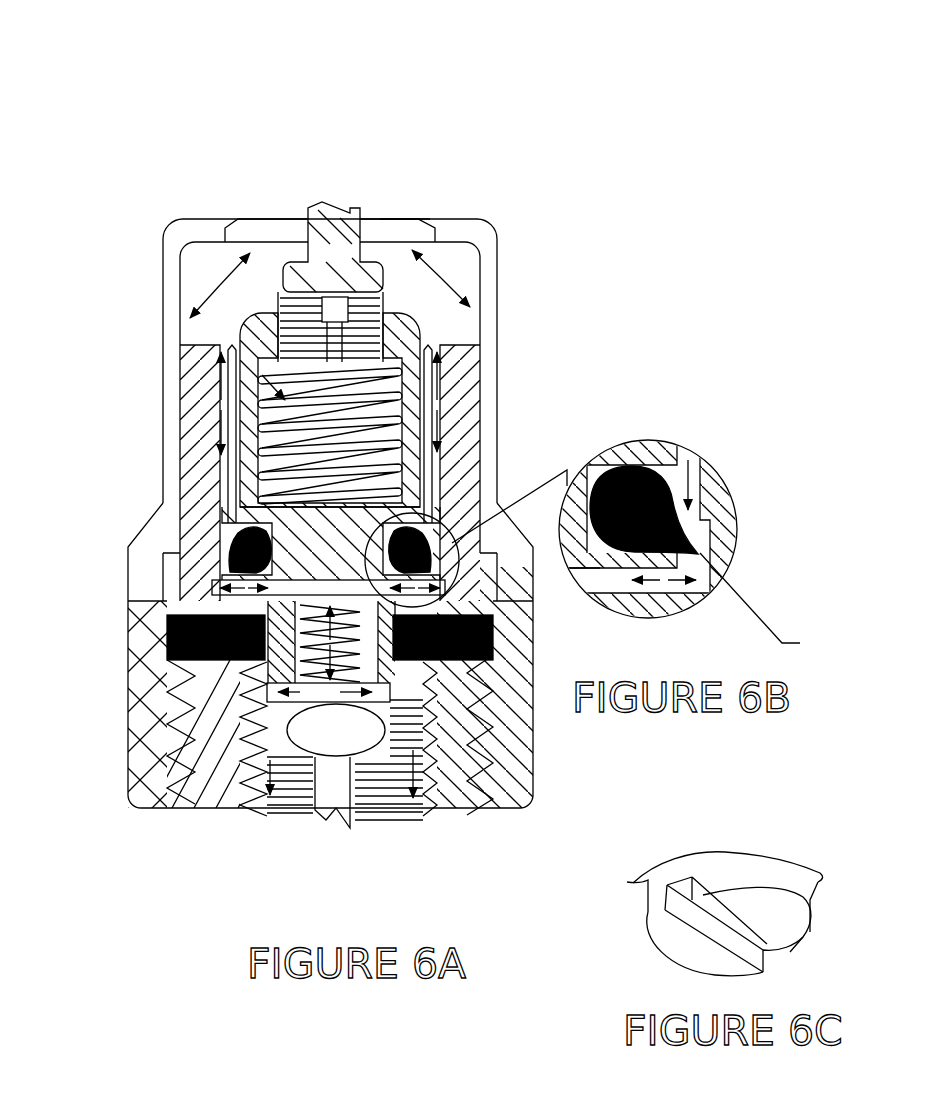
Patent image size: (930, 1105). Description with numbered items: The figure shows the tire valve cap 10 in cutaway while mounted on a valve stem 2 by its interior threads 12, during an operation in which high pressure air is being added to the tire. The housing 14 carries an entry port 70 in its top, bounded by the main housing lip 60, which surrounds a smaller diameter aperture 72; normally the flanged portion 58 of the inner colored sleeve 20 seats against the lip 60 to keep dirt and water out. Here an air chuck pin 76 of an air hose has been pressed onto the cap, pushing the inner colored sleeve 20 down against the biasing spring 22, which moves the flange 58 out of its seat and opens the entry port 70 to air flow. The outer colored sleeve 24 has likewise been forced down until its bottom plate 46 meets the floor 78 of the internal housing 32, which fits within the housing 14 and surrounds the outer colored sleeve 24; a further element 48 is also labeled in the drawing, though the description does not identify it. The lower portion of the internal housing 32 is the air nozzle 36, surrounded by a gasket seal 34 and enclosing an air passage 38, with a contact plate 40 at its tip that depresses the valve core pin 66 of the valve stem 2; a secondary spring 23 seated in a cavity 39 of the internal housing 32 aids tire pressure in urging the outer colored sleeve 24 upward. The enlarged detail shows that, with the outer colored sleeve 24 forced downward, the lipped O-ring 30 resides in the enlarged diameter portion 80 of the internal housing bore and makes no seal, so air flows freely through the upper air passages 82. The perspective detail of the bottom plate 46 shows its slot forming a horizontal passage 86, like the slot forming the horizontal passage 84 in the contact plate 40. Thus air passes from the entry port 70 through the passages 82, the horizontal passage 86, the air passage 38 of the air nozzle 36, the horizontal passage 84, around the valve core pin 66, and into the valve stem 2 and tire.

In FIG. 6A, the tire valve cap 10 is at (85, 130).
In FIG. 6A, the main housing lip 60 is at (233, 208).
In FIG. 6A, the entry port 70 is at (266, 245).
In FIG. 6A, the aperture 72 is at (397, 214).
In FIG. 6A, the air chuck pin 76 is at (340, 203).
In FIG. 6A, the air passage 82 is at (448, 265).
In FIG. 6A, the flanged portion 58 is at (245, 424).
In FIG. 6A, the inner colored sleeve 20 is at (236, 333).
In FIG. 6A, the outer colored sleeve 24 is at (437, 343).
In FIG. 6C, the outer colored sleeve 24 is at (648, 892).
In FIG. 6A, the biasing spring 22 is at (237, 347).
In FIG. 6A, the main spring 48 is at (367, 481).
In FIG. 6A, the floor 78 is at (442, 440).
In FIG. 6A, the internal housing 32 is at (176, 455).
In FIG. 6A, the lipped O-ring 30 is at (222, 537).
In FIG. 6A, the housing 14 is at (154, 552).
In FIG. 6A, the enlarged diameter portion 80 is at (200, 571).
In FIG. 6A, the bottom plate 46 is at (167, 616).
In FIG. 6C, the bottom plate 46 is at (652, 948).
In FIG. 6A, the gasket seal 34 is at (160, 660).
In FIG. 6A, the air passage 38 is at (187, 708).
In FIG. 6A, the cavity 39 is at (283, 643).
In FIG. 6A, the air nozzle 36 is at (200, 740).
In FIG. 6A, the secondary spring 23 is at (290, 713).
In FIG. 6A, the contact plate 40 is at (214, 800).
In FIG. 6A, the horizontal passage 84 is at (265, 704).
In FIG. 6A, the valve core pin 66 is at (345, 762).
In FIG. 6A, the interior threads 12 is at (490, 700).
In FIG. 6A, the valve stem 2 is at (446, 793).
In FIG. 6C, the horizontal passage 86 is at (688, 872).